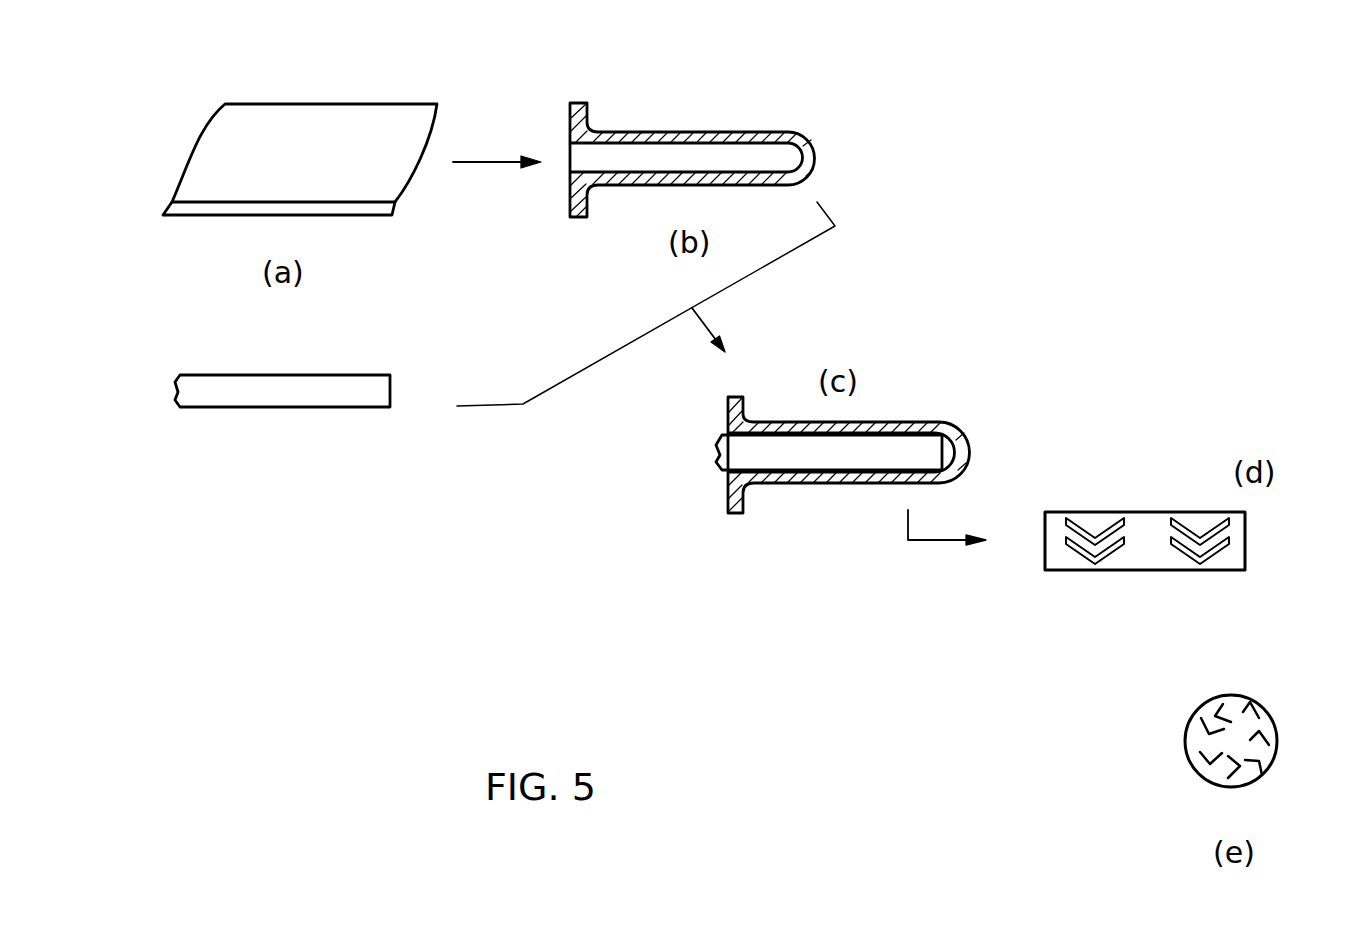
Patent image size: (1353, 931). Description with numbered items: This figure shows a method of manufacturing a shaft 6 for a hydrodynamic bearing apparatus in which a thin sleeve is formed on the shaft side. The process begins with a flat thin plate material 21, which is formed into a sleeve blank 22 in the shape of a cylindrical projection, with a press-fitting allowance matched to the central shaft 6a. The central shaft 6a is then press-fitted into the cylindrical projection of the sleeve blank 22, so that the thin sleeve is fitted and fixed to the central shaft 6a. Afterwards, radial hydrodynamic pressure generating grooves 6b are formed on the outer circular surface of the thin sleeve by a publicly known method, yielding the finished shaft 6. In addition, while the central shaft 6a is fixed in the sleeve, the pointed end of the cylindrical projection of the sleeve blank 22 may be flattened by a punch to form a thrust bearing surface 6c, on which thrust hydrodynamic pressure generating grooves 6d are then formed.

The flat thin plate material 21 is at (318, 103).
The sleeve blank 22 is at (693, 130).
The central shaft 6a is at (281, 409).
The shaft 6 is at (1145, 538).
The radial hydrodynamic pressure generating grooves 6b is at (1080, 562).
The thrust bearing surface 6c is at (1234, 739).
The thrust hydrodynamic pressure generating grooves 6d is at (1256, 702).